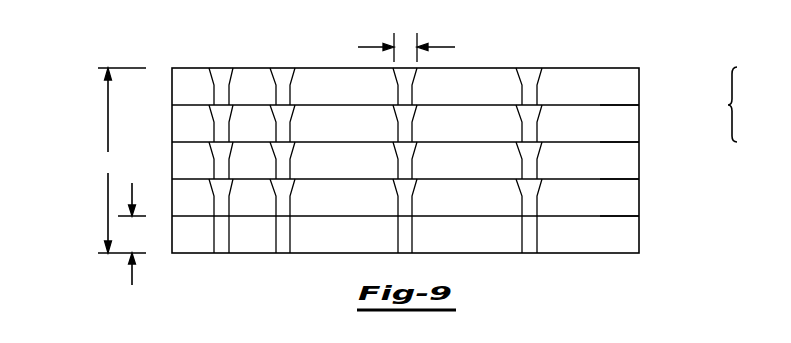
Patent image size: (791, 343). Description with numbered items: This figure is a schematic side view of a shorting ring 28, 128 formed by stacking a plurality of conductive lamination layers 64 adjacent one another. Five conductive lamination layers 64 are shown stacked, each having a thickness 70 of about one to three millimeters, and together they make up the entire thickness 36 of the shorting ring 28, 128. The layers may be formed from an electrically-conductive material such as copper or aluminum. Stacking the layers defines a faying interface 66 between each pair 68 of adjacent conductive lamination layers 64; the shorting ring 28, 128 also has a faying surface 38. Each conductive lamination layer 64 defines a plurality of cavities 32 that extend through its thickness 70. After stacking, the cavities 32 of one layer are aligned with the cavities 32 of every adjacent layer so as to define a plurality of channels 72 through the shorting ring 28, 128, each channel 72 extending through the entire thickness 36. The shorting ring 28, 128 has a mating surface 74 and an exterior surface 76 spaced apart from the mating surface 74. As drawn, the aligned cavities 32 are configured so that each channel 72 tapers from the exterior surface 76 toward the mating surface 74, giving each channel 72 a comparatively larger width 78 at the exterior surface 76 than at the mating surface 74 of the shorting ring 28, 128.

The shorting ring 28 is at (408, 161).
The shorting ring 128 is at (154, 34).
The cavities 32 is at (218, 53).
The entire thickness 36 is at (122, 160).
The faying surface 38 is at (357, 106).
The conductive lamination layers 64 is at (172, 118).
The faying interface 66 is at (634, 106).
The pair of adjacent conductive lamination layers 68 is at (744, 104).
The thickness 70 is at (132, 234).
The channels 72 is at (218, 266).
The mating surface 74 is at (607, 257).
The exterior surface 76 is at (556, 68).
The width 78 is at (416, 47).